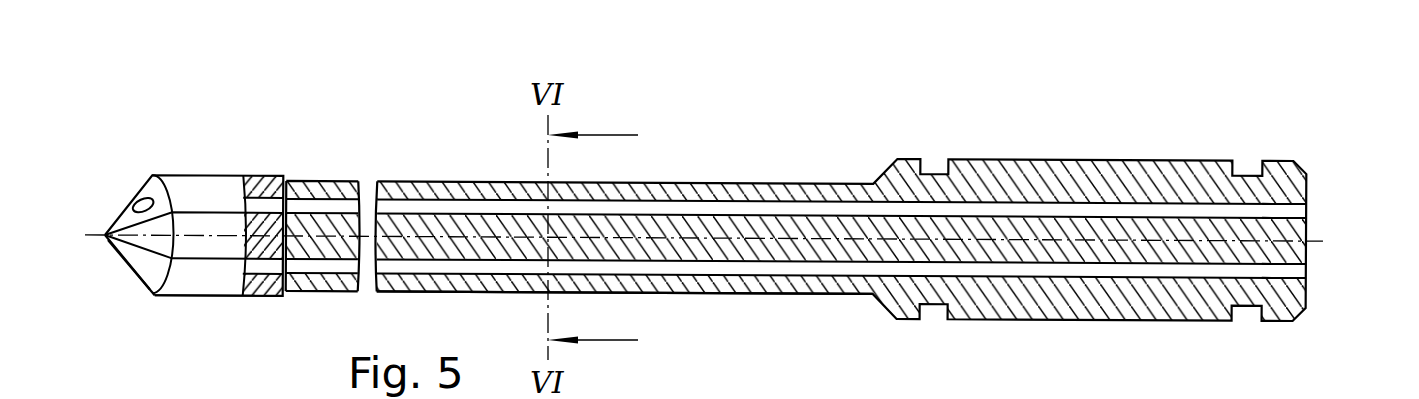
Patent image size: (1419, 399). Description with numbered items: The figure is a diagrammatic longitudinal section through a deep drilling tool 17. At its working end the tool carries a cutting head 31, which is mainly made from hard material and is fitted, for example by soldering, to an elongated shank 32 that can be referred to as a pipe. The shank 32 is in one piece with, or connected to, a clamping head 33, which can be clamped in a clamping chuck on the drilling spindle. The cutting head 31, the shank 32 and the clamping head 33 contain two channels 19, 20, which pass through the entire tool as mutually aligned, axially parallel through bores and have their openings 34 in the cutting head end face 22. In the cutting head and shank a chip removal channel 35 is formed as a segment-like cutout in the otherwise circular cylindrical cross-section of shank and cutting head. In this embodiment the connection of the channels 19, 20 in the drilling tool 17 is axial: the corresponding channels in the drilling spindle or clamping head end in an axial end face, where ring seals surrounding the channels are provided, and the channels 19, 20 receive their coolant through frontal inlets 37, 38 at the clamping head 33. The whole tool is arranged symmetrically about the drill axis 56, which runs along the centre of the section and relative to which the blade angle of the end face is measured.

The deep drilling tool 17 is at (838, 215).
The channel 19 is at (713, 205).
The channel 20 is at (777, 285).
The cutting head end face 22 is at (120, 207).
The hard material cutting head 31 is at (171, 262).
The shank 32 is at (720, 272).
The clamping head 33 is at (1118, 124).
The openings 34 is at (146, 200).
The chip removal channel 35 is at (213, 273).
The frontal inlet 37 is at (1297, 210).
The frontal inlet 38 is at (1297, 273).
The drill axis 56 is at (193, 233).